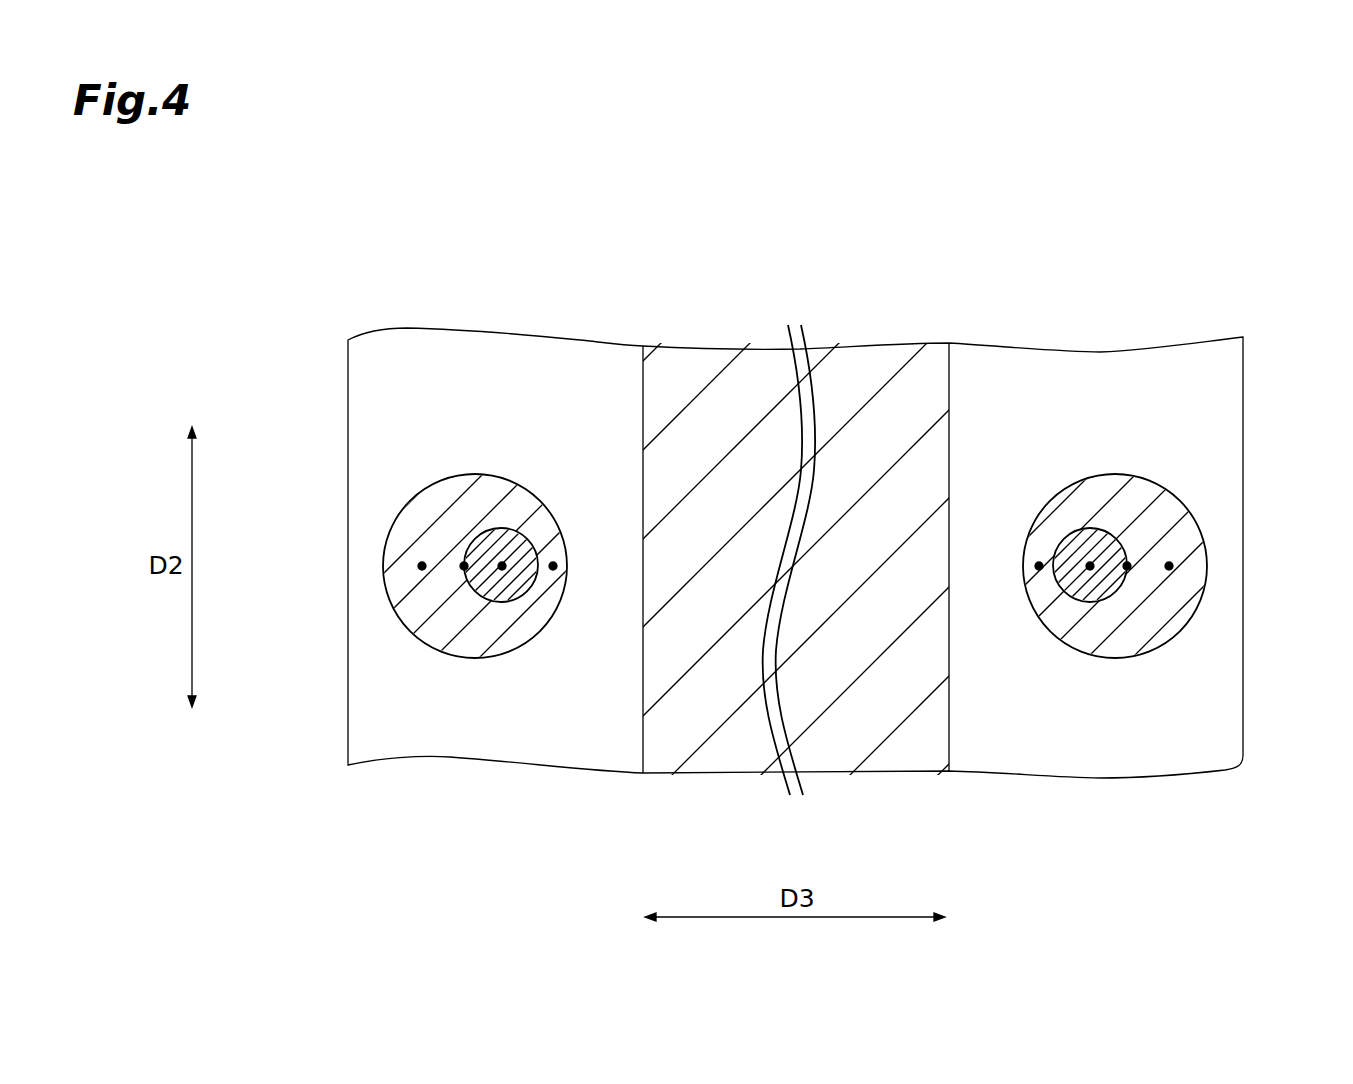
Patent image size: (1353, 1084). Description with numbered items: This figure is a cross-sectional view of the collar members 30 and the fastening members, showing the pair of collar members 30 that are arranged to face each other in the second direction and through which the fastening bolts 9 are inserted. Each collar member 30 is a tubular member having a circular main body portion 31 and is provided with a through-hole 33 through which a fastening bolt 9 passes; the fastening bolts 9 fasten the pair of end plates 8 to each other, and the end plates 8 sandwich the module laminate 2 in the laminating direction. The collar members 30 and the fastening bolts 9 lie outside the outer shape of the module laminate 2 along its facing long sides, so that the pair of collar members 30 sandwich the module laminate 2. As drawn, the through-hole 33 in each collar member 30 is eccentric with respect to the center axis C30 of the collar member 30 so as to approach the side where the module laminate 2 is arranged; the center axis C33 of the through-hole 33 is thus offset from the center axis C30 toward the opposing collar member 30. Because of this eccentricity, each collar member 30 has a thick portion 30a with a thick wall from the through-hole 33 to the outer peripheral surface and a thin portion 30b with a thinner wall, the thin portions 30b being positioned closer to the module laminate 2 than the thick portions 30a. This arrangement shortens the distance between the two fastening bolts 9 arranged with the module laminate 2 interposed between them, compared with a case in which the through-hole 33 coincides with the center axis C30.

The module laminate 2 is at (873, 752).
The end plate 8 is at (1225, 395).
The fastening bolt 9 is at (487, 556).
The collar member 30 is at (415, 484).
The thick portion 30a is at (422, 566).
The thin portion 30b is at (553, 562).
The main body portion 31 is at (383, 560).
The through-hole 33 is at (505, 540).
The center axis of the collar member C30 is at (464, 566).
The center axis of the through-hole C33 is at (502, 566).